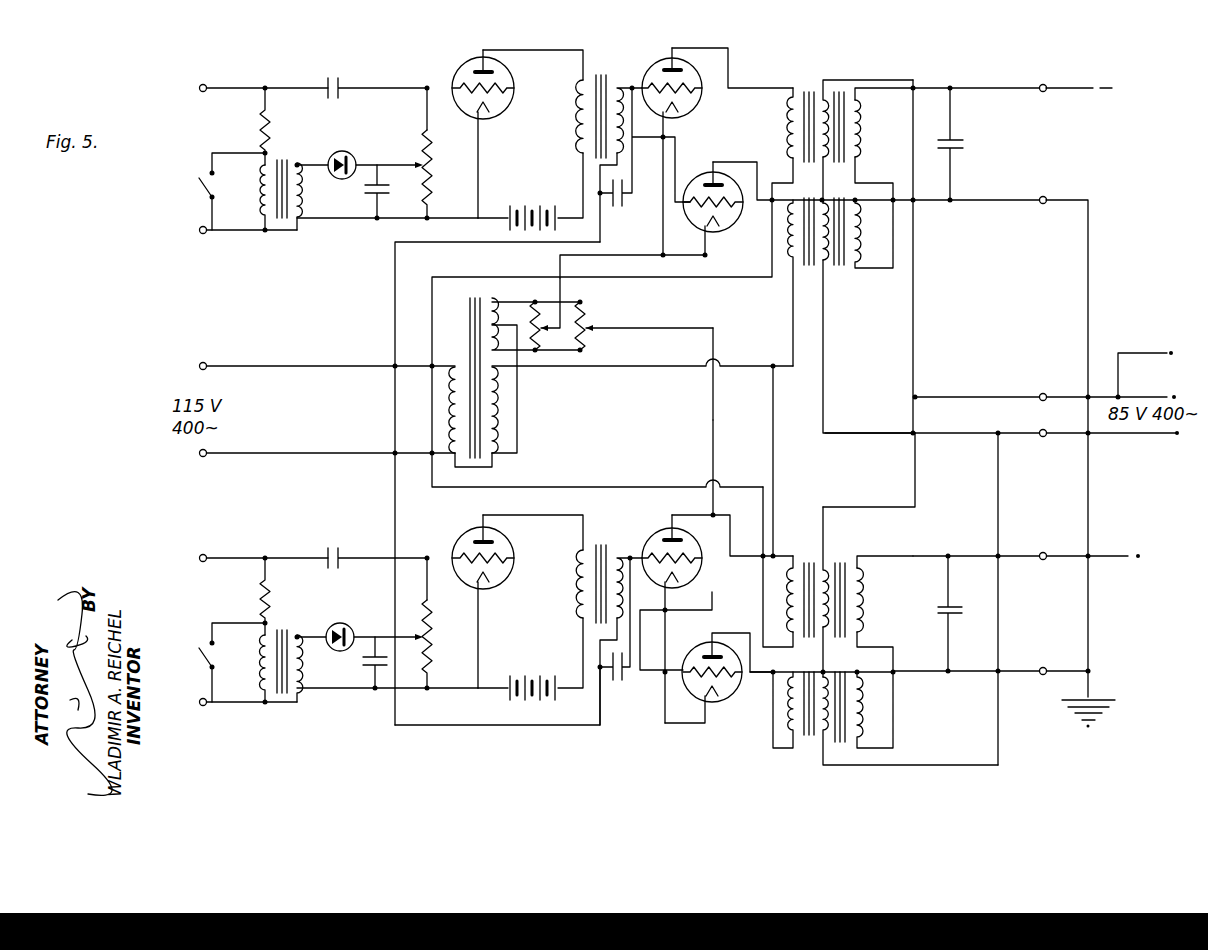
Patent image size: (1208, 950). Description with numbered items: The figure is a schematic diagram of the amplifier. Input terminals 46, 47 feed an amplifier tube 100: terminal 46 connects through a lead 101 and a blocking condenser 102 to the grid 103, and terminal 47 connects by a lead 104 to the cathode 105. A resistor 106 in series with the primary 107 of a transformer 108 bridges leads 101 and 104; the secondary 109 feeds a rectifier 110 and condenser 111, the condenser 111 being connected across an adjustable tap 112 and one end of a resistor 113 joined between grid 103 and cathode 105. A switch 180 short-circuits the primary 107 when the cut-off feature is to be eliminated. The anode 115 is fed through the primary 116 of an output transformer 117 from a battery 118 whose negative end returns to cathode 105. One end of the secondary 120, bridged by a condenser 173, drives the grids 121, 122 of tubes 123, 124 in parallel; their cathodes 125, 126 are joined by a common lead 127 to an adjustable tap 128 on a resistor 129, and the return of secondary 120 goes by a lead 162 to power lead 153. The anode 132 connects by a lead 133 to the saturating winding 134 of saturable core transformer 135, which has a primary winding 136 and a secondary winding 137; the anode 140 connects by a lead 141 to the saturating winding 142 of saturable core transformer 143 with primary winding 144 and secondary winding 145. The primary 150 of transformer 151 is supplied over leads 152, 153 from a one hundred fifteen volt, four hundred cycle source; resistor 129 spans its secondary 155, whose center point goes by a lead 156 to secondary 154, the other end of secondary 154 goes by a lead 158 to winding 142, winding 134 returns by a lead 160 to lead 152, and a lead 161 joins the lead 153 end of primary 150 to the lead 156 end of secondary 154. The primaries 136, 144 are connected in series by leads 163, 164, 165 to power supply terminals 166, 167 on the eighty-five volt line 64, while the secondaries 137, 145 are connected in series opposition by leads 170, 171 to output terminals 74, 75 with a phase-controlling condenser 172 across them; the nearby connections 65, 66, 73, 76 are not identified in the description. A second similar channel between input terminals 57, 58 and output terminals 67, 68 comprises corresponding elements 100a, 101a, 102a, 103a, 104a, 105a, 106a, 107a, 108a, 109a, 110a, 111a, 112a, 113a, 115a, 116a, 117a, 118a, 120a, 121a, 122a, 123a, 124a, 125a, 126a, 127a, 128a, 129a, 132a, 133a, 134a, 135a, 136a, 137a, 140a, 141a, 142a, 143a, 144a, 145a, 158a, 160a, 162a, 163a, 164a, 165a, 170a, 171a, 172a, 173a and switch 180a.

The input terminal 46 is at (208, 86).
The input terminal 47 is at (206, 234).
The input terminal 57 is at (208, 556).
The input terminal 58 is at (207, 706).
The power supply line 64 is at (1150, 396).
The ground connection 65 is at (1112, 688).
The output lead 66 is at (1130, 558).
The output terminal 67 is at (1042, 560).
The output terminal 68 is at (1043, 668).
The output lead 73 is at (1098, 86).
The output terminal 74 is at (1047, 85).
The output terminal 75 is at (1047, 198).
The output lead 76 is at (1148, 352).
The amplifier tube 100 is at (514, 84).
The amplifier tube 100a is at (514, 556).
The lead 101 is at (330, 86).
The lead 101a is at (290, 556).
The blocking condenser 102 is at (342, 80).
The blocking condenser 102a is at (340, 547).
The grid 103 is at (478, 68).
The grid 103a is at (478, 540).
The lead 104 is at (335, 220).
The lead 104a is at (318, 700).
The cathode 105 is at (490, 106).
The cathode 105a is at (492, 575).
The resistor 106 is at (262, 128).
The resistor 106a is at (262, 600).
The primary 107 is at (262, 192).
The primary 107a is at (263, 660).
The transformer 108 is at (297, 158).
The transformer 108a is at (299, 626).
The secondary 109 is at (300, 163).
The secondary 109a is at (300, 636).
The rectifier 110 is at (352, 156).
The rectifier 110a is at (350, 625).
The condenser 111 is at (365, 190).
The condenser 111a is at (370, 680).
The adjustable tap 112 is at (422, 160).
The adjustable tap 112a is at (420, 645).
The resistor 113 is at (432, 175).
The resistor 113a is at (433, 642).
The anode 115 is at (488, 50).
The anode 115a is at (500, 530).
The primary 116 is at (598, 80).
The primary 116a is at (597, 550).
The output transformer 117 is at (621, 80).
The output transformer 117a is at (636, 548).
The source of plate potential 118 is at (523, 205).
The source of plate potential 118a is at (526, 708).
The secondary 120 is at (620, 155).
The secondary 120a is at (596, 626).
The grid 121 is at (700, 92).
The grid 121a is at (698, 568).
The grid 122 is at (722, 215).
The grid 122a is at (728, 694).
The amplifier tube 123 is at (682, 70).
The amplifier tube 123a is at (682, 544).
The amplifier tube 124 is at (708, 182).
The amplifier tube 124a is at (712, 702).
The cathode 125 is at (680, 110).
The cathode 125a is at (683, 584).
The cathode 126 is at (700, 222).
The cathode 126a is at (700, 700).
The common lead 127 is at (606, 256).
The common lead 127a is at (711, 442).
The adjustable tap 128 is at (592, 352).
The adjustable tap 128a is at (592, 330).
The resistor 129 is at (520, 298).
The resistor 129a is at (588, 302).
The anode 132 is at (722, 42).
The anode 132a is at (735, 510).
The lead 133 is at (770, 86).
The lead 133a is at (792, 556).
The saturating winding 134 is at (828, 92).
The saturating winding 134a is at (834, 569).
The saturable core transformer 135 is at (857, 95).
The saturable core transformer 135a is at (862, 566).
The primary winding 136 is at (852, 162).
The primary winding 136a is at (858, 640).
The secondary winding 137 is at (862, 140).
The secondary winding 137a is at (864, 605).
The anode 140 is at (745, 162).
The anode 140a is at (710, 656).
The lead 141 is at (782, 184).
The lead 141a is at (764, 650).
The saturating winding 142 is at (790, 262).
The saturating winding 142a is at (790, 735).
The saturable core transformer 143 is at (861, 273).
The saturable core transformer 143a is at (869, 737).
The primary winding 144 is at (822, 265).
The primary winding 144a is at (826, 735).
The secondary winding 145 is at (860, 258).
The secondary winding 145a is at (862, 720).
The primary 150 is at (466, 420).
The transformer 151 is at (462, 346).
The lead 152 is at (318, 365).
The lead 153 is at (312, 452).
The secondary 154 is at (500, 431).
The secondary 155 is at (496, 298).
The lead 156 is at (518, 410).
The lead 158 is at (662, 368).
The lead 158a is at (775, 470).
The lead 160 is at (711, 332).
The lead 160a is at (622, 486).
The lead 161 is at (492, 467).
The lead 162 is at (392, 292).
The lead 162a is at (512, 728).
The lead 163 is at (820, 200).
The lead 163a is at (820, 672).
The lead 164 is at (826, 373).
The lead 164a is at (1000, 727).
The lead 165 is at (916, 337).
The lead 165a is at (916, 472).
The power supply terminal 166 is at (1040, 437).
The power supply terminal 167 is at (1040, 400).
The lead 170 is at (975, 86).
The lead 170a is at (962, 555).
The lead 171 is at (978, 200).
The lead 171a is at (975, 656).
The condenser 172 is at (965, 148).
The condenser 172a is at (962, 610).
The condenser 173 is at (622, 205).
The condenser 173a is at (620, 685).
The switch 180 is at (207, 184).
The switch 180a is at (207, 658).